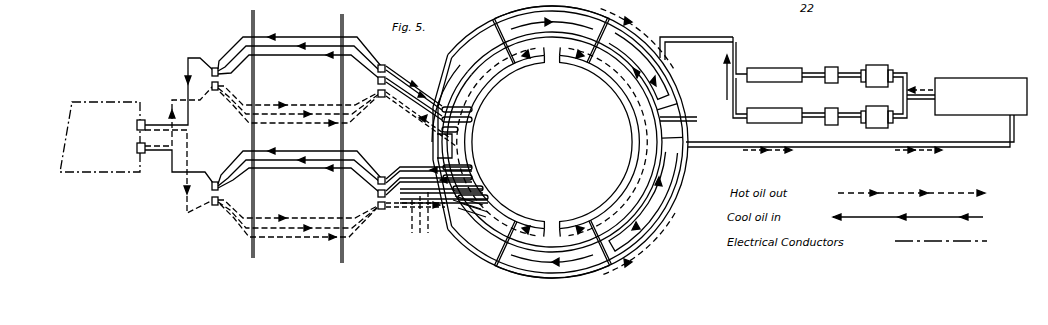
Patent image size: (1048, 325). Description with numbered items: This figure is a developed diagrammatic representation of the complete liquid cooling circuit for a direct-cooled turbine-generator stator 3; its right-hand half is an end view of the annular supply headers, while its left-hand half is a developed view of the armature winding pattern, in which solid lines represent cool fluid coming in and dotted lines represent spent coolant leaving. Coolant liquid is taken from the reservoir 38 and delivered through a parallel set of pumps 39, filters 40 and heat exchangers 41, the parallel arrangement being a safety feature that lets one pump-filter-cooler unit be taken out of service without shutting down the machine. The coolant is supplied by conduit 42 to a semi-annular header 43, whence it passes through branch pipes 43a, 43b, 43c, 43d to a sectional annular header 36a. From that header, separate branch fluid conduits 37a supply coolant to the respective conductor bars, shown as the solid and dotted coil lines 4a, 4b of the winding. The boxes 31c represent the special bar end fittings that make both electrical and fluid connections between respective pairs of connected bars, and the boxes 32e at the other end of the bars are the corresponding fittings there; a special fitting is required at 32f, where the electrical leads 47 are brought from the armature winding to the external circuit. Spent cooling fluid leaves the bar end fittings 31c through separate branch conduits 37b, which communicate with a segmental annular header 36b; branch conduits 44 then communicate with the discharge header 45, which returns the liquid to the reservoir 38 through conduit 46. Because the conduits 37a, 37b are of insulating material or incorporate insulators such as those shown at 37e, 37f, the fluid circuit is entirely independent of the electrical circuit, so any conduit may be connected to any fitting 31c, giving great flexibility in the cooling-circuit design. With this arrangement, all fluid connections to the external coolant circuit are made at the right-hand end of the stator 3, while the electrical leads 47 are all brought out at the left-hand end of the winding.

The stator 3 is at (299, 127).
The cool oil coil conductors 4a is at (318, 55).
The hot oil coil conductors 4b is at (314, 120).
The bar end fittings 31c is at (383, 65).
The bar end fittings 32e is at (212, 90).
The bar end fitting 32f is at (137, 126).
The sectional annular header 36a is at (553, 40).
The segmental annular header 36b is at (568, 66).
The branch fluid conduits 37a is at (424, 92).
The branch conduits 37b is at (421, 171).
The insulator 37e is at (462, 205).
The insulator 37f is at (475, 214).
The reservoir 38 is at (975, 78).
The pumps 39 is at (872, 108).
The filters 40 is at (830, 110).
The heat exchangers 41 is at (768, 92).
The conduit 42 is at (708, 32).
The semi-annular header 43 is at (576, 26).
The branch pipe 43a is at (447, 165).
The branch pipe 43b is at (446, 108).
The branch pipe 43c is at (663, 85).
The branch pipe 43d is at (648, 200).
The branch conduits 44 is at (497, 22).
The discharge header 45 is at (677, 196).
The conduit 46 is at (832, 147).
The electrical leads 47 is at (72, 110).